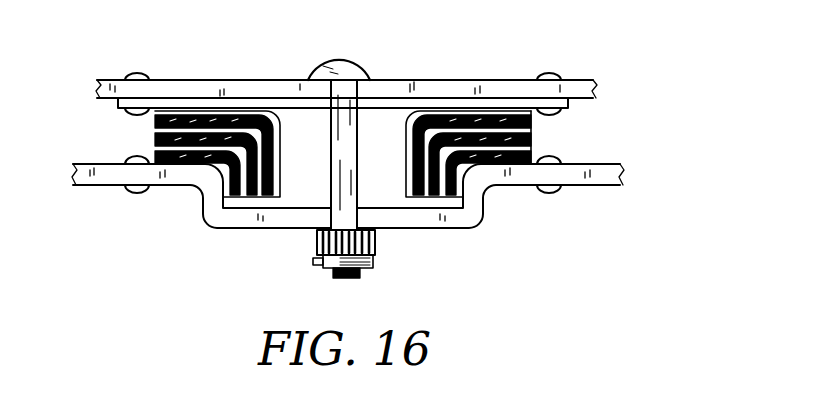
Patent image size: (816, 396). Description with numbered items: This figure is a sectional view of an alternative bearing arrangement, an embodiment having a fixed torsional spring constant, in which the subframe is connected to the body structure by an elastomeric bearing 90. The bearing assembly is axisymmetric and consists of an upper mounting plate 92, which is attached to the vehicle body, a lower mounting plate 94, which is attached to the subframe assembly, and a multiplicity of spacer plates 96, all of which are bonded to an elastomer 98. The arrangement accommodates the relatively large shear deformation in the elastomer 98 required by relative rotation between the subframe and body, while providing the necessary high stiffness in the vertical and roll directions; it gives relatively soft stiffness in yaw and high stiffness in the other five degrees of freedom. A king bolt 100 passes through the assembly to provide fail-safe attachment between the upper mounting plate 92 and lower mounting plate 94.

The elastomeric bearing 90 is at (373, 180).
The upper mounting plate 92 is at (566, 100).
The lower mounting plate 94 is at (566, 163).
The spacer plates 96 is at (155, 141).
The elastomer 98 is at (155, 120).
The king bolt 100 is at (333, 270).